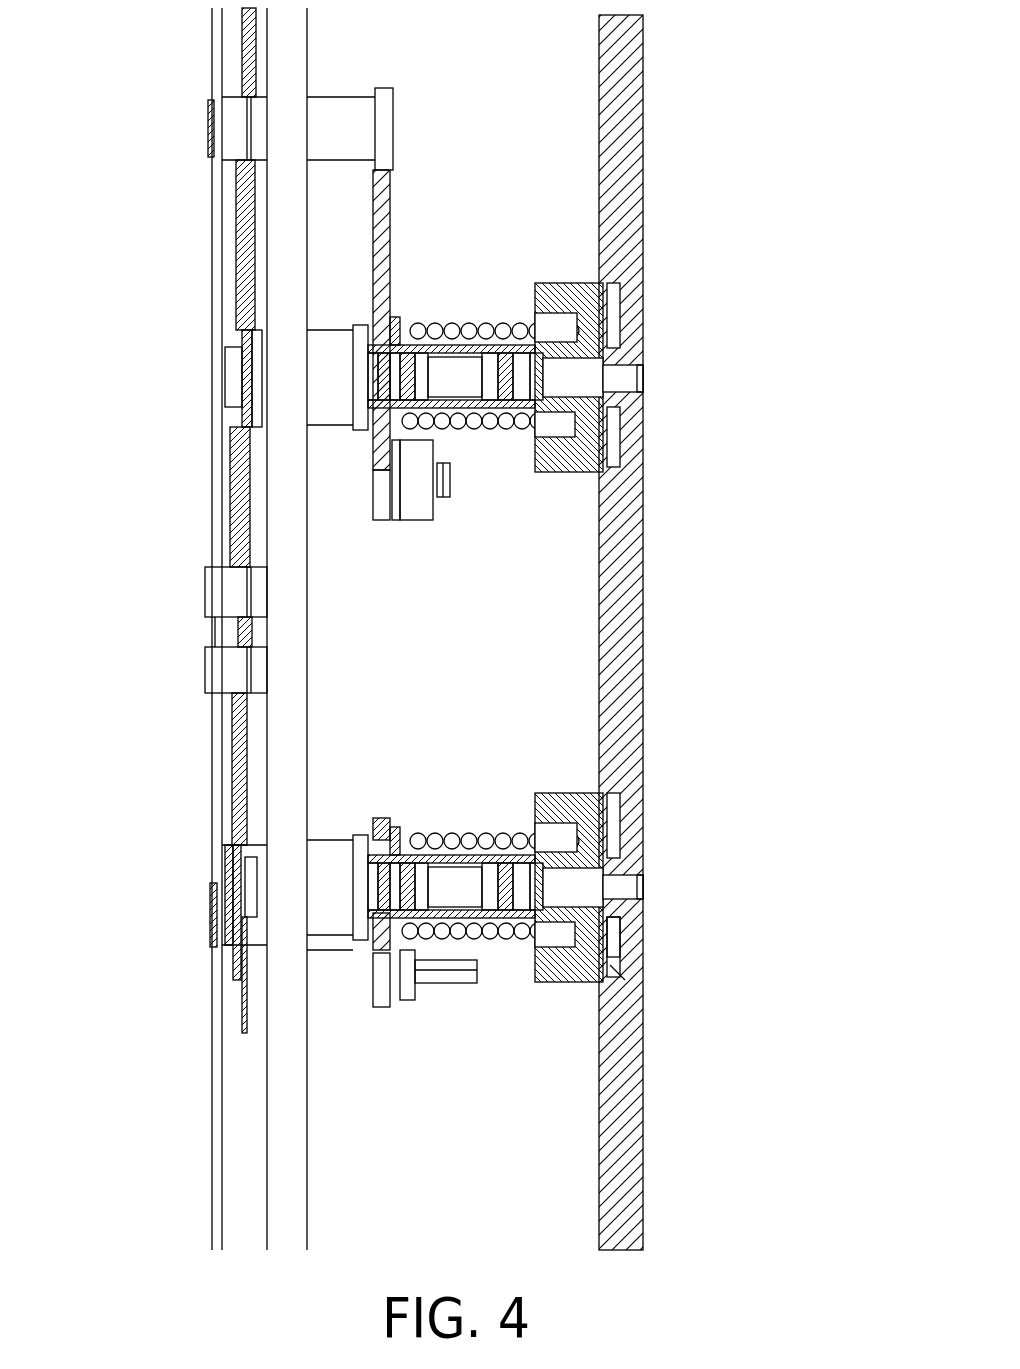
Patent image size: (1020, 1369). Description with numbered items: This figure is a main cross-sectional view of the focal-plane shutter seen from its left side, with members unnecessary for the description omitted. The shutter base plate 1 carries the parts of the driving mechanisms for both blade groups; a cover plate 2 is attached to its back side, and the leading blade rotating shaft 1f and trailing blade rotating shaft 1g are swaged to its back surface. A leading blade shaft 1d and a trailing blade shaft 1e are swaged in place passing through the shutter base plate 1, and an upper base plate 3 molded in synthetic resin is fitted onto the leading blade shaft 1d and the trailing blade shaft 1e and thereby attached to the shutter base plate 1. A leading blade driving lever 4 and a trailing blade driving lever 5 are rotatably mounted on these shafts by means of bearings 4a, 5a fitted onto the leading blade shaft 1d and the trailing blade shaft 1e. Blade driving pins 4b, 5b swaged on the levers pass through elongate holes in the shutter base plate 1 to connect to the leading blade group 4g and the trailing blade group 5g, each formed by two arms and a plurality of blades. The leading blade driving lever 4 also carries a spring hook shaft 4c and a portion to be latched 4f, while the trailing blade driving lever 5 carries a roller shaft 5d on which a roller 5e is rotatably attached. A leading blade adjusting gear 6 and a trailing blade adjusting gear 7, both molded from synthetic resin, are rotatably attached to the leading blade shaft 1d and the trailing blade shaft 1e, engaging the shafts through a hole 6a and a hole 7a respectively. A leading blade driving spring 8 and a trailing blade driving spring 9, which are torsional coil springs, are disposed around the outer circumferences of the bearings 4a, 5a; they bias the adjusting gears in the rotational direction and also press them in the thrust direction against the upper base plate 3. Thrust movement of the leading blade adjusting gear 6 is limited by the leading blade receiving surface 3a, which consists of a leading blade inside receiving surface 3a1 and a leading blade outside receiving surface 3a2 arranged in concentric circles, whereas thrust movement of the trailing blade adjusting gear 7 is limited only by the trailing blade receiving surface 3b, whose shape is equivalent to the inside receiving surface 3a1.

The shutter base plate 1 is at (297, 1178).
The leading blade shaft 1d is at (325, 865).
The trailing blade shaft 1e is at (333, 405).
The leading blade rotating shaft 1f is at (215, 677).
The trailing blade rotating shaft 1g is at (215, 590).
The cover plate 2 is at (212, 1080).
The upper base plate 3 is at (625, 655).
The leading blade receiving surface 3a is at (750, 920).
The leading blade inside receiving surface 3a1 is at (640, 925).
The leading blade outside receiving surface 3a2 is at (632, 982).
The trailing blade receiving surface 3b is at (612, 405).
The leading blade driving lever 4 is at (380, 1008).
The bearing 4a is at (392, 818).
The blade driving pin 4b is at (325, 950).
The spring hook shaft 4c is at (418, 985).
The portion to be latched 4f is at (462, 985).
The leading blade group 4g is at (230, 868).
The trailing blade driving lever 5 is at (378, 497).
The bearing 5a is at (400, 312).
The blade driving pin 5b is at (340, 125).
The roller shaft 5d is at (450, 480).
The roller 5e is at (417, 503).
The trailing blade group 5g is at (228, 383).
The leading blade adjusting gear 6 is at (550, 793).
The hole 6a is at (615, 878).
The trailing blade adjusting gear 7 is at (545, 474).
The hole 7a is at (615, 375).
The leading blade driving spring 8 is at (470, 828).
The trailing blade driving spring 9 is at (470, 318).